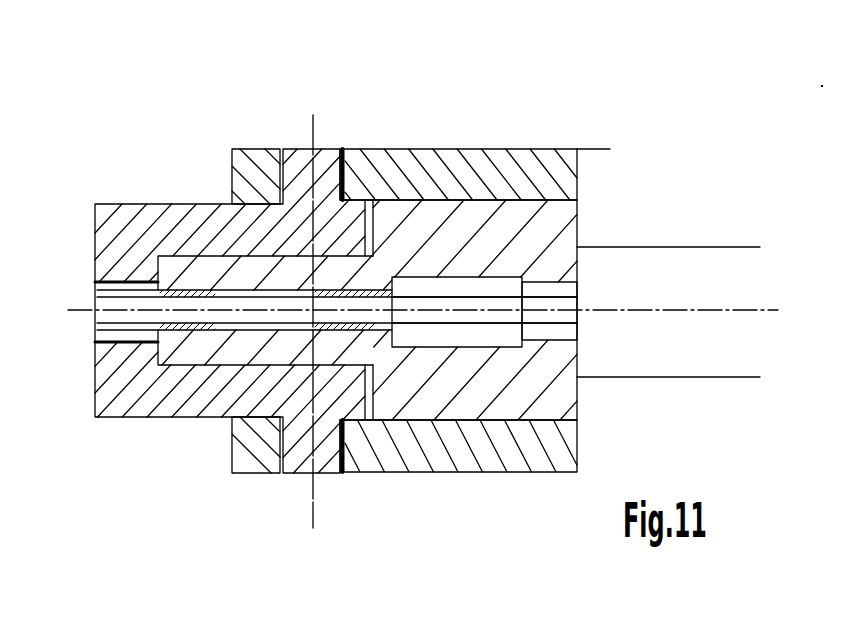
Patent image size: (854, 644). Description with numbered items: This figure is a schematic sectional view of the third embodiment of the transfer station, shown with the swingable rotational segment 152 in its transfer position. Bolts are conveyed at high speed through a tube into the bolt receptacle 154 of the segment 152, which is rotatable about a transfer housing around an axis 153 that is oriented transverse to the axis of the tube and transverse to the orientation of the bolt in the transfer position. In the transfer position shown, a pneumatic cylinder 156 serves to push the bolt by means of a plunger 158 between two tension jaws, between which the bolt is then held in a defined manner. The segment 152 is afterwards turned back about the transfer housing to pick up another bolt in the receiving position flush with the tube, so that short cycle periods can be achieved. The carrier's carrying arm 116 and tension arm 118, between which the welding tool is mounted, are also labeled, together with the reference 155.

The rotational segment 152 is at (185, 227).
The bolt receptacle 154 is at (102, 293).
The carrying arm 116 is at (397, 173).
The tension arm 118 is at (438, 450).
The plunger 158 is at (453, 308).
The pneumatic cylinder 156 is at (664, 175).
The axis 153 is at (313, 500).
The center plane 155 is at (285, 5).